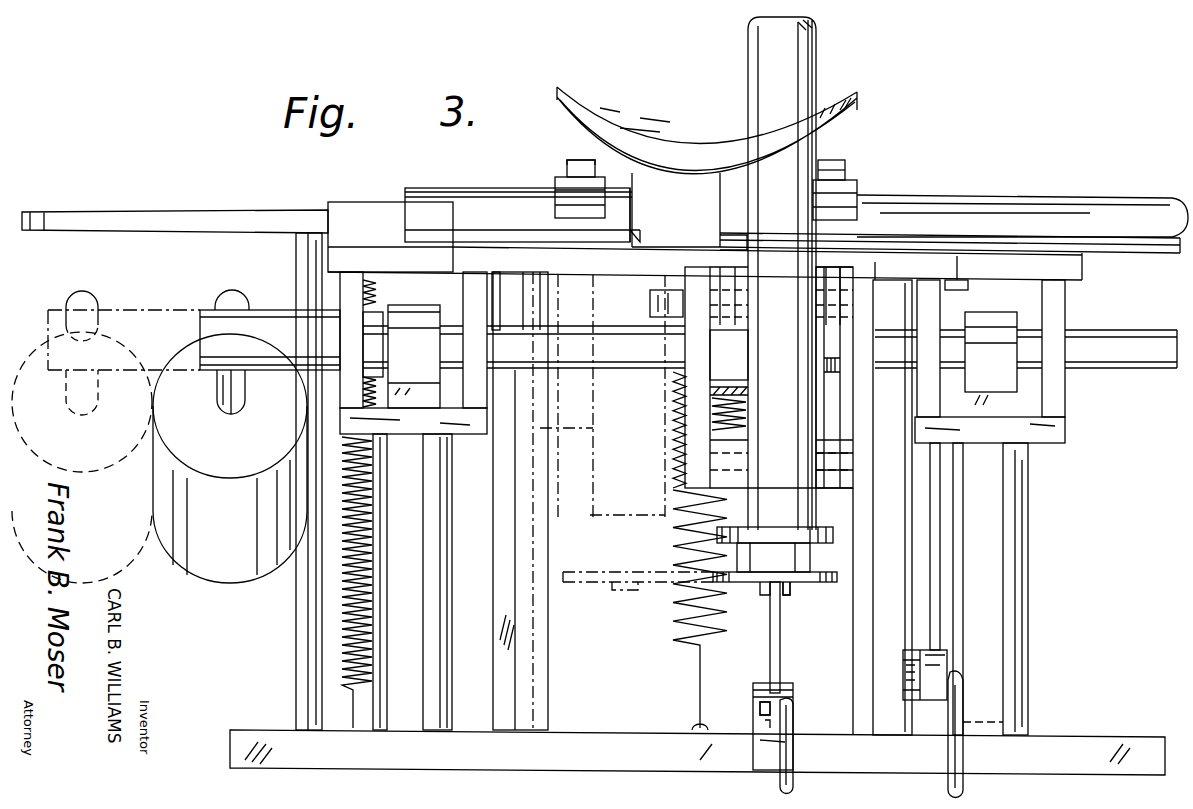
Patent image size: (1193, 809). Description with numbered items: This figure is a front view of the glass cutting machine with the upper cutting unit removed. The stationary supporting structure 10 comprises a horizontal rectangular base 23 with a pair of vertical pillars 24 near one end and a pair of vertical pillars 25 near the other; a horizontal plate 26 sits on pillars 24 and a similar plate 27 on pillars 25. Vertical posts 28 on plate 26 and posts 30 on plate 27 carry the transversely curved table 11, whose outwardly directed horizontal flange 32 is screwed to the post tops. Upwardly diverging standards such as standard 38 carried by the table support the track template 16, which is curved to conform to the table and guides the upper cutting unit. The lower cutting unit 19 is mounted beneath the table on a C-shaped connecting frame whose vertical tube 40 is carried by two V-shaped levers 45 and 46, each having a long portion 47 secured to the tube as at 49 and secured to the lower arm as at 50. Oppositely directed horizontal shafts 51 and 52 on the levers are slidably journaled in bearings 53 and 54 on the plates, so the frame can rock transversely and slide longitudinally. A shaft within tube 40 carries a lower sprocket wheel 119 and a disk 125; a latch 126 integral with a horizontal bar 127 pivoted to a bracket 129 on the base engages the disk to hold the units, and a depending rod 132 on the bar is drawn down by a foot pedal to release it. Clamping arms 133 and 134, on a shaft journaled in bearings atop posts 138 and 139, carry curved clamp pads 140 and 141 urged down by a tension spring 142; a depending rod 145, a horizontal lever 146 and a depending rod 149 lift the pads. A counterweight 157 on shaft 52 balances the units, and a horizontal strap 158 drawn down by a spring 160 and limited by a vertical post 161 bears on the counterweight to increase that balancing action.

The stationary supporting structure 10 is at (1025, 607).
The table 11 is at (1145, 243).
The track template 16 is at (622, 110).
The lower cutting unit 19 is at (735, 352).
The base 23 is at (557, 738).
The vertical pillars 24 is at (1010, 497).
The vertical pillars 25 is at (435, 492).
The horizontal plate 26 is at (985, 447).
The horizontal plate 27 is at (458, 440).
The vertical posts 28 is at (1048, 300).
The posts 30 is at (467, 301).
The horizontal flange 32 is at (512, 275).
The standard 38 is at (676, 190).
The vertical tube 40 is at (790, 58).
The V-shaped lever 45 is at (878, 400).
The V-shaped lever 46 is at (690, 411).
The long portion 47 is at (682, 380).
The securing point 49 is at (820, 290).
The securing point 50 is at (840, 498).
The horizontal shaft 51 is at (895, 345).
The horizontal shaft 52 is at (633, 318).
The bearing 53 is at (1005, 335).
The bearing 54 is at (420, 366).
The sprocket wheel 119 is at (757, 527).
The disk 125 is at (803, 585).
The latch 126 is at (780, 632).
The horizontal bar 127 is at (793, 688).
The bracket 129 is at (748, 722).
The depending rod 132 is at (790, 745).
The clamping arm 133 is at (566, 165).
The clamping arm 134 is at (833, 167).
The post 138 is at (506, 582).
The post 139 is at (860, 558).
The clamp pad 140 is at (560, 189).
The clamp pad 141 is at (850, 193).
The tension spring 142 is at (678, 612).
The depending rod 145 is at (942, 567).
The horizontal lever 146 is at (905, 650).
The depending rod 149 is at (958, 748).
The counterweight 157 is at (192, 562).
The horizontal strap 158 is at (193, 228).
The spring 160 is at (375, 602).
The vertical post 161 is at (302, 612).